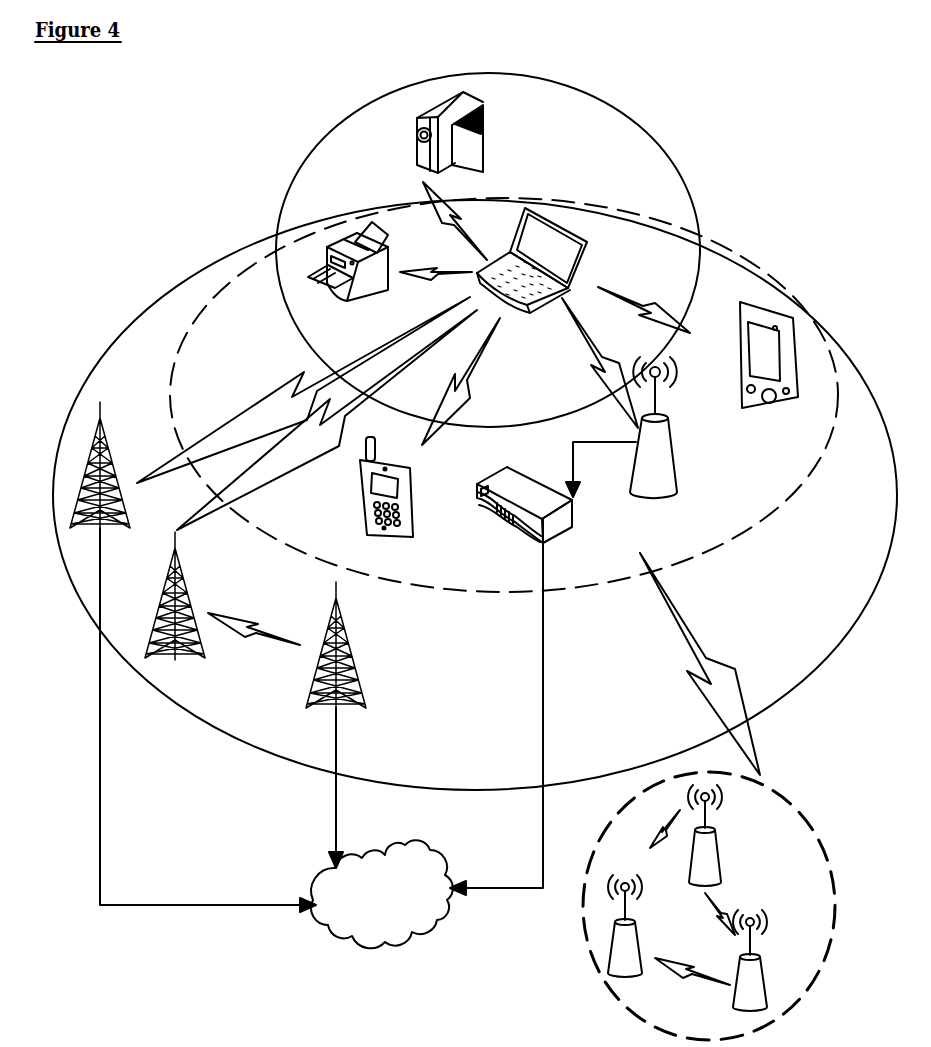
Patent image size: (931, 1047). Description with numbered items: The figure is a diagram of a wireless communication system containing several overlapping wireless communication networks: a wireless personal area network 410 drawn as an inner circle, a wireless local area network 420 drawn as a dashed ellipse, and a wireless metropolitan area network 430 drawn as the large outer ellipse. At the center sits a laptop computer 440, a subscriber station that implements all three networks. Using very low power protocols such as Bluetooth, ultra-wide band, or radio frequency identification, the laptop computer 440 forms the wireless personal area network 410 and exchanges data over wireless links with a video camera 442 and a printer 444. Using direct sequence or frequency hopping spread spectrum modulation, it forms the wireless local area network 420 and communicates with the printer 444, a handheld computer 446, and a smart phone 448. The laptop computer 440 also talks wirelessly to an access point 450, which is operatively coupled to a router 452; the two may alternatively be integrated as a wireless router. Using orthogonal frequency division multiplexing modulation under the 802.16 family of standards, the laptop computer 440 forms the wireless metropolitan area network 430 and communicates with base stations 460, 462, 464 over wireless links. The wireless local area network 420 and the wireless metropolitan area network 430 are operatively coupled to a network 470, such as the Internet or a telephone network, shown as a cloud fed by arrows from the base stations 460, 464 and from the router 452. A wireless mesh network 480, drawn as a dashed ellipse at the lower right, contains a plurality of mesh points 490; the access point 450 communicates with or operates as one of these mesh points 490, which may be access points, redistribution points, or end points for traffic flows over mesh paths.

The wireless personal area network 410 is at (277, 218).
The wireless local area network 420 is at (213, 295).
The wireless metropolitan area network 430 is at (143, 310).
The laptop computer 440 is at (581, 210).
The video camera 442 is at (483, 144).
The printer 444 is at (380, 290).
The handheld computer 446 is at (770, 412).
The smart phone 448 is at (410, 542).
The access point 450 is at (660, 493).
The router 452 is at (545, 536).
The base station 460 is at (102, 409).
The base station 462 is at (190, 605).
The base station 464 is at (365, 668).
The network 470 is at (440, 866).
The wireless mesh network 480 is at (717, 893).
The mesh points 490 is at (753, 886).